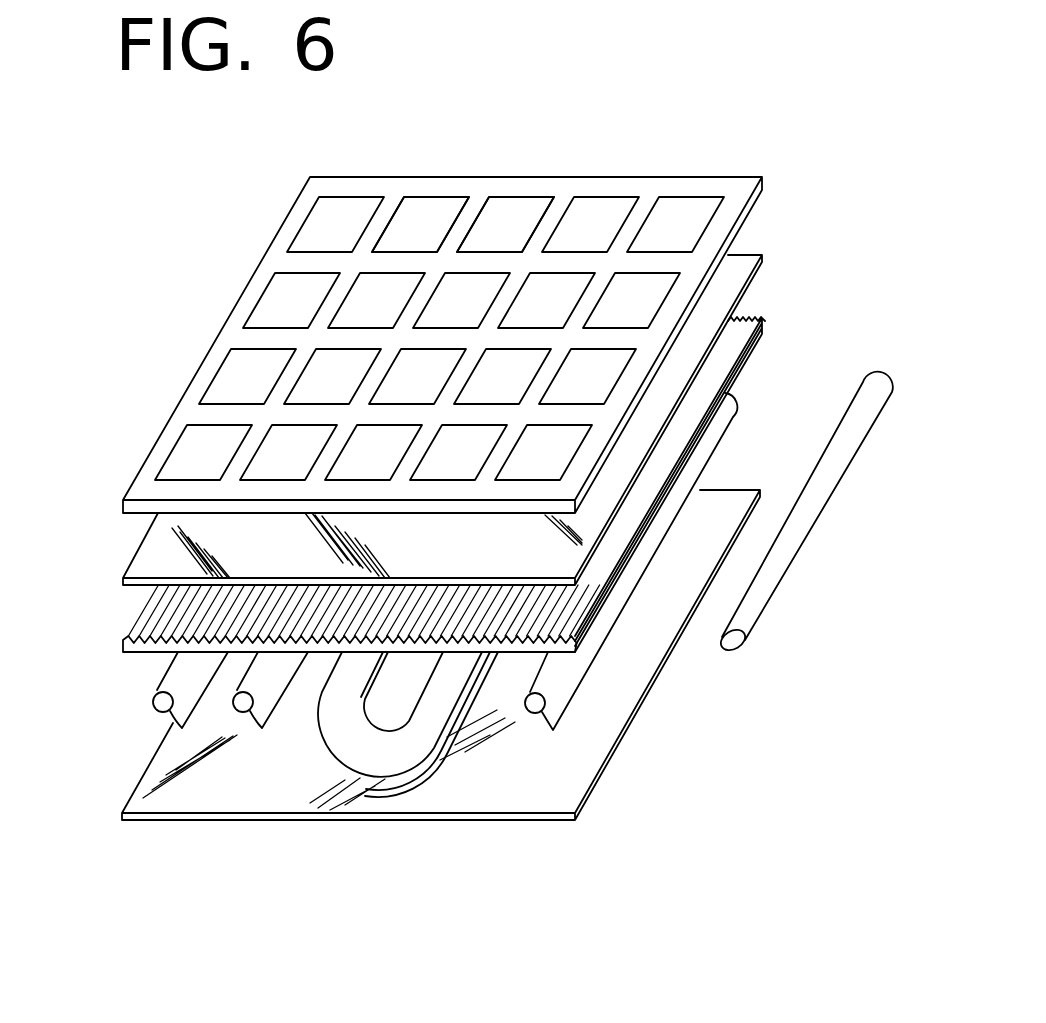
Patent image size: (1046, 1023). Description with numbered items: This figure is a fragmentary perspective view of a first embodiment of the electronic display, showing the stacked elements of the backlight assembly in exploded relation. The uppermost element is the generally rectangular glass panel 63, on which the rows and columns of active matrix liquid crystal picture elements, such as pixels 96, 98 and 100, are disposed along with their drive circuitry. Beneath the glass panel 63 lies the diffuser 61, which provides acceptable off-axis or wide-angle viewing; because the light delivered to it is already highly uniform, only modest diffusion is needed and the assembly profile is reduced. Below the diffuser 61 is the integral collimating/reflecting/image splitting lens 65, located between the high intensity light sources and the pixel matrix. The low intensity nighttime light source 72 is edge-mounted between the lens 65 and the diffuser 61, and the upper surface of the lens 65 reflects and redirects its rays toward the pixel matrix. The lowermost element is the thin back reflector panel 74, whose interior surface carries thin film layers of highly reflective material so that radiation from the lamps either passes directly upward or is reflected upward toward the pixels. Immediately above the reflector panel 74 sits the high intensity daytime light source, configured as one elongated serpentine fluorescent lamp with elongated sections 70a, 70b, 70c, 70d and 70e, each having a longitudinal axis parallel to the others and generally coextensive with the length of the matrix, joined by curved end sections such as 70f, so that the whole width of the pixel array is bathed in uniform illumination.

The glass panel 63 is at (735, 193).
The pixel 96 is at (327, 225).
The pixel 98 is at (428, 222).
The pixel 100 is at (507, 215).
The diffuser 61 is at (735, 268).
The integral collimating/reflecting/image splitting lens 65 is at (743, 313).
The back reflector panel 74 is at (600, 778).
The low intensity nighttime light source 72 is at (767, 580).
The elongated lamp section 70a is at (177, 690).
The elongated lamp section 70b is at (262, 707).
The elongated lamp section 70c is at (338, 745).
The elongated lamp section 70d is at (430, 710).
The elongated lamp section 70e is at (557, 700).
The curved end section 70f is at (362, 765).